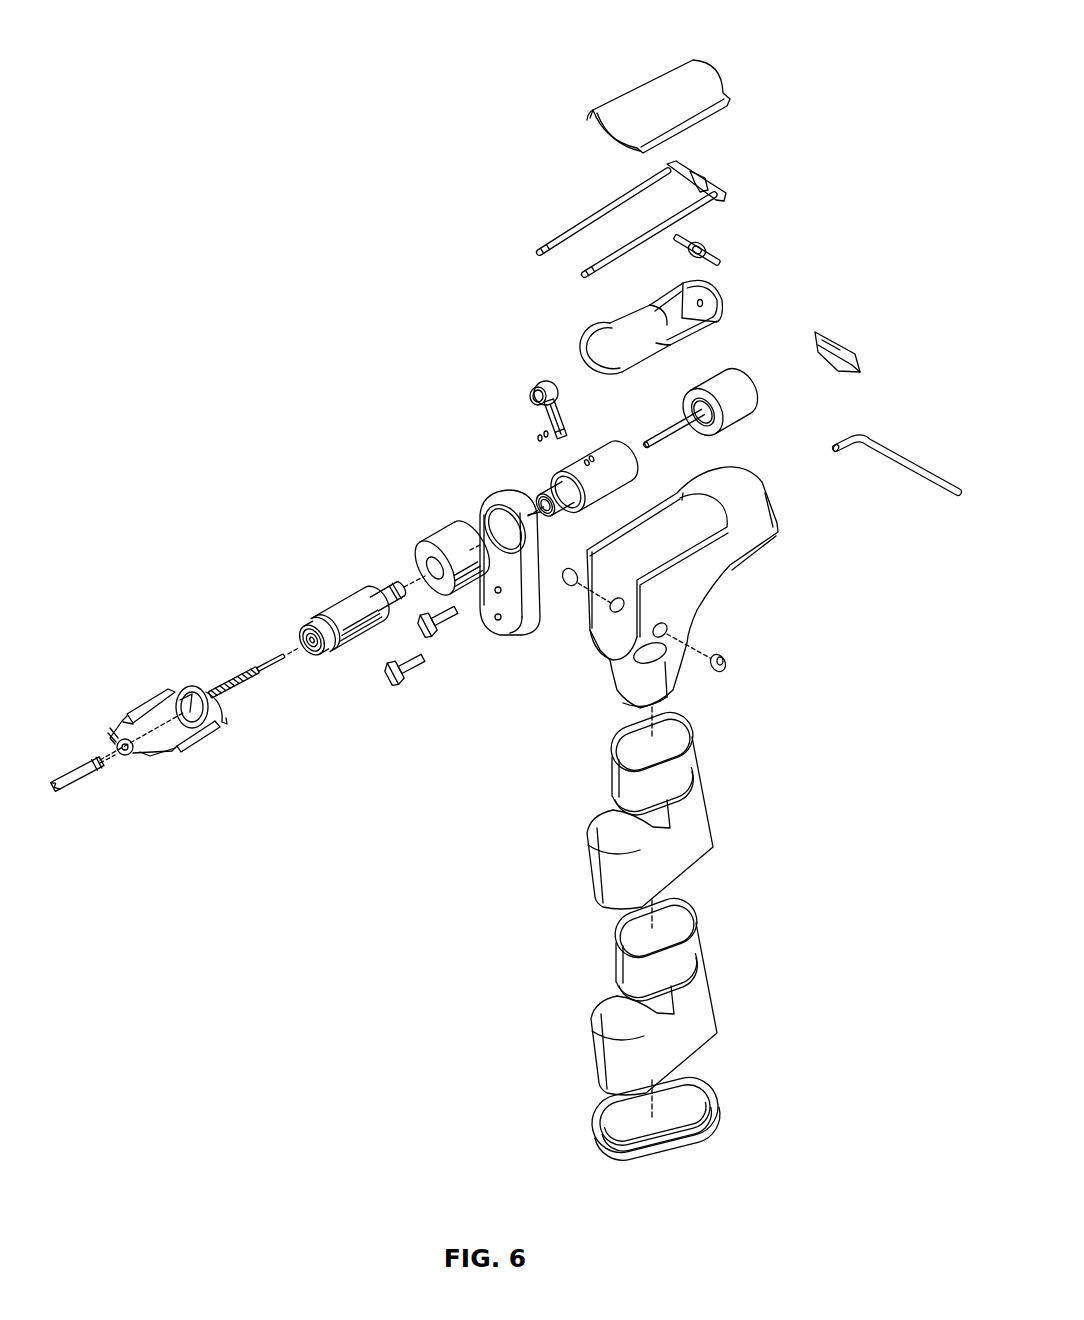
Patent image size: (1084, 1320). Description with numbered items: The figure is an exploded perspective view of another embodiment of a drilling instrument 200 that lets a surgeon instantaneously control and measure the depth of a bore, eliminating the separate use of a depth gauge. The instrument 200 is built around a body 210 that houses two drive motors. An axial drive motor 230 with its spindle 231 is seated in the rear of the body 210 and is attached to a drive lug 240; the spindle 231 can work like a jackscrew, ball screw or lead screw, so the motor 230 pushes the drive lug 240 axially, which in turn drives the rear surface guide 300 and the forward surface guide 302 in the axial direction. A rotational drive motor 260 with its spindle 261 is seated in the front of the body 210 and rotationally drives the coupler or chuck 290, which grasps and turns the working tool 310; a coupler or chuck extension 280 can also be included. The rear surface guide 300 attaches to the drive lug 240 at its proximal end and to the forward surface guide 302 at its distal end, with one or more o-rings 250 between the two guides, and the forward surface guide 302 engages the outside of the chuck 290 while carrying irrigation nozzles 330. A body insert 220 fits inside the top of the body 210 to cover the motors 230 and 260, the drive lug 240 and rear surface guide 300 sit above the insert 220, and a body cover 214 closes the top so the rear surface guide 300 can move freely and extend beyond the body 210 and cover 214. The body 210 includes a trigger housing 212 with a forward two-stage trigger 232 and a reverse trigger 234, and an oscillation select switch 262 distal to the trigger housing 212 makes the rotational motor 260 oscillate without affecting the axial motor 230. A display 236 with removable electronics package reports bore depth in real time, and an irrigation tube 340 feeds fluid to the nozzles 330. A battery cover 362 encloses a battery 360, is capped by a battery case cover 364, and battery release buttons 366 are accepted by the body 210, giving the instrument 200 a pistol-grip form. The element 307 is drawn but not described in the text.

The instrument 200 is at (182, 86).
The body 210 is at (748, 490).
The trigger housing 212 is at (525, 628).
The body cover 214 is at (653, 92).
The body insert 220 is at (612, 326).
The axial drive motor 230 is at (737, 380).
The spindle 231 is at (673, 430).
The forward two-stage trigger 232 is at (400, 682).
The reverse trigger 234 is at (435, 632).
The display 236 is at (830, 335).
The drive lug 240 is at (714, 252).
The o-rings 250 is at (537, 439).
The rotational drive motor 260 is at (610, 440).
The spindle 261 is at (550, 498).
The oscillation select switch 262 is at (545, 380).
The coupler or chuck extension 280 is at (442, 538).
The coupler or chuck 290 is at (345, 605).
The rear surface guide 300 is at (708, 182).
The forward surface guide 302 is at (148, 703).
The tip rod 307 is at (80, 760).
The tool 310 is at (267, 657).
The irrigation nozzles 330 is at (112, 736).
The irrigation tube 340 is at (877, 447).
The battery 360 is at (690, 993).
The battery cover 362 is at (703, 792).
The battery case cover 364 is at (687, 1097).
The battery release buttons 366 is at (727, 664).